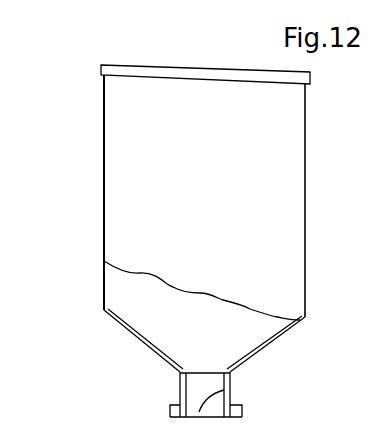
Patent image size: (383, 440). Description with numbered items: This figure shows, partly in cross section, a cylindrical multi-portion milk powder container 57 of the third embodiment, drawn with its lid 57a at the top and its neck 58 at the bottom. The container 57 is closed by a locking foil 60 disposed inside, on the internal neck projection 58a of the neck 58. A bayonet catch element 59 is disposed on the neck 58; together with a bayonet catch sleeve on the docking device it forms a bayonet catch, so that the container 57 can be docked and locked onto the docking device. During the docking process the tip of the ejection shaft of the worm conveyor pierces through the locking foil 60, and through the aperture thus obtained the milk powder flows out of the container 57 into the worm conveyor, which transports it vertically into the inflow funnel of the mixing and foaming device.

The multi-portion milk powder container 57 is at (167, 186).
The multi-portion milk powder container lid 57a is at (127, 72).
The internal neck projection 58a is at (180, 371).
The multi-portion milk powder container neck 58 is at (180, 388).
The bayonet catch element 59 is at (173, 408).
The locking foil 60 is at (228, 382).